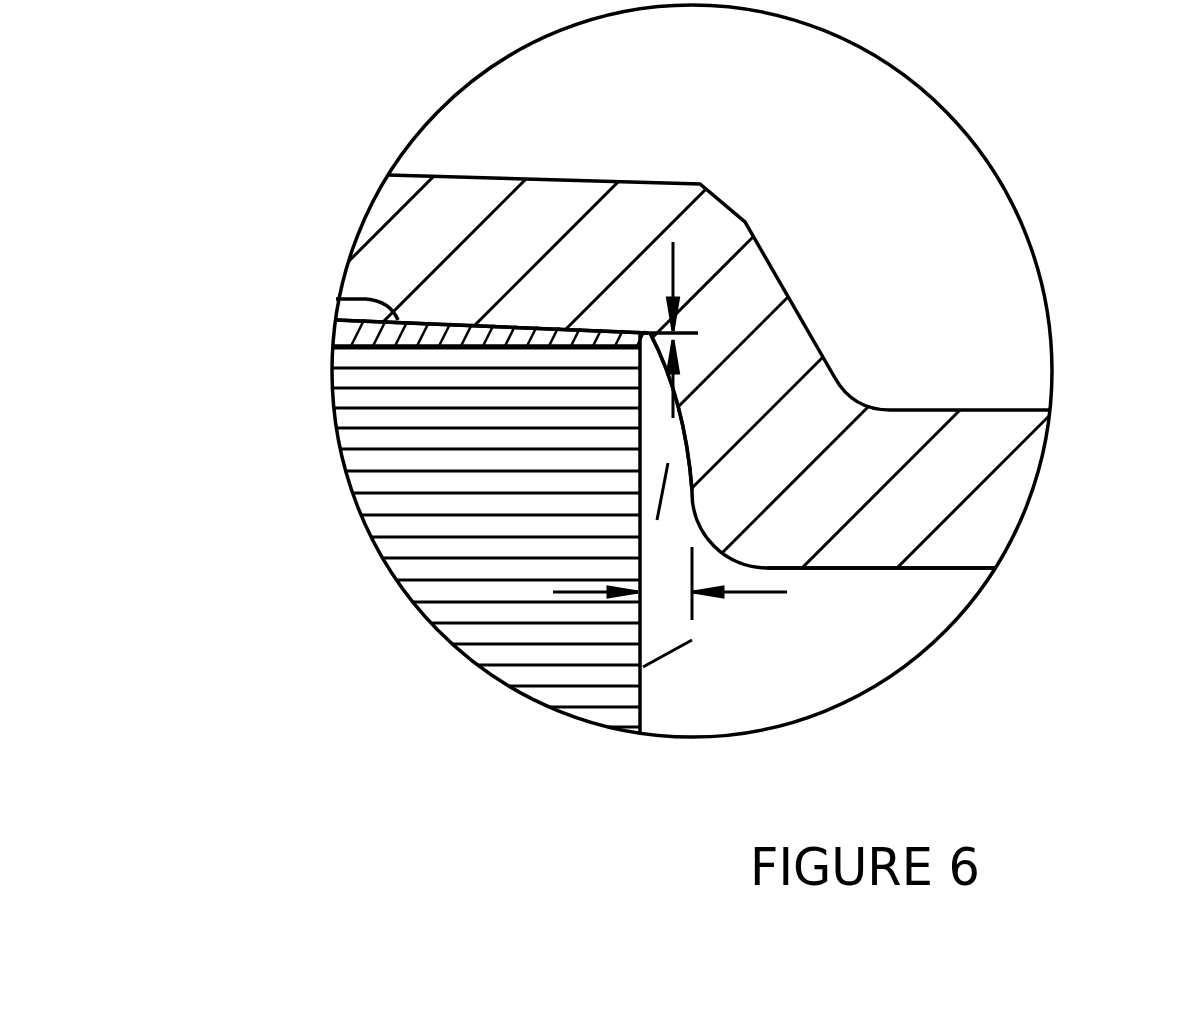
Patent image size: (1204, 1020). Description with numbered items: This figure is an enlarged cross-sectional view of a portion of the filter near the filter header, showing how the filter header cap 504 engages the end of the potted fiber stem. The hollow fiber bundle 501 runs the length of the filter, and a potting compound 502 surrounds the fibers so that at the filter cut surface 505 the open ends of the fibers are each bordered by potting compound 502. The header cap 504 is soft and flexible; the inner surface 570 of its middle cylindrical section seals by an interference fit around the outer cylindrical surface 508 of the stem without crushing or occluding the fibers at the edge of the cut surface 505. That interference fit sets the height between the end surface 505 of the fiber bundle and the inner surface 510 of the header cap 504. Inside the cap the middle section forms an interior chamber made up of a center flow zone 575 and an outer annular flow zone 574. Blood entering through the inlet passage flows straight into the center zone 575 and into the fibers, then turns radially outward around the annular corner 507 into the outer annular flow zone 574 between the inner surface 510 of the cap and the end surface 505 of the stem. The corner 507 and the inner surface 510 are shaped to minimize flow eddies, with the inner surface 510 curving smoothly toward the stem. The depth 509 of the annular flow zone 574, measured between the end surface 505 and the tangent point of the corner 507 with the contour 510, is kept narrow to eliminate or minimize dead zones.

The hollow fiber bundle 501 is at (446, 537).
The potting compound 502 is at (269, 243).
The filter header cap 504 is at (963, 486).
The filter cut surface 505 is at (788, 557).
The annular corner 507 is at (602, 500).
The outer cylindrical surface of the stem 508 is at (439, 205).
The depth of the annular flow zone 509 is at (715, 576).
The inner surface of the header cap 510 is at (911, 266).
The inner surface of the middle cylindrical section 570 is at (438, 383).
The outer annular flow zone 574 is at (919, 345).
The center flow zone 575 is at (811, 684).